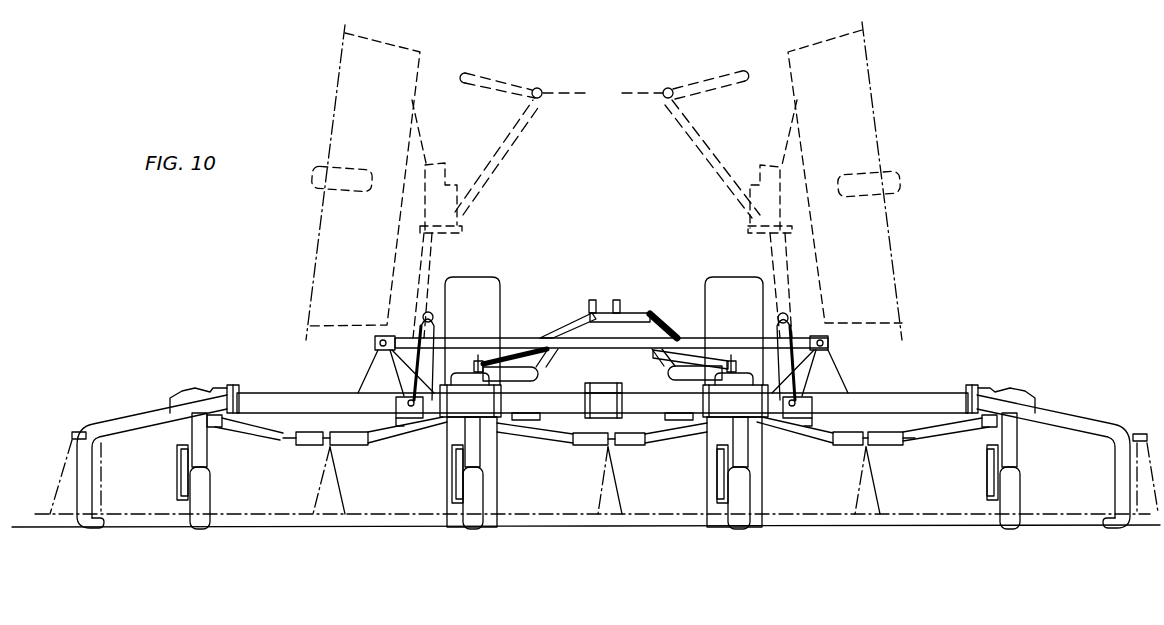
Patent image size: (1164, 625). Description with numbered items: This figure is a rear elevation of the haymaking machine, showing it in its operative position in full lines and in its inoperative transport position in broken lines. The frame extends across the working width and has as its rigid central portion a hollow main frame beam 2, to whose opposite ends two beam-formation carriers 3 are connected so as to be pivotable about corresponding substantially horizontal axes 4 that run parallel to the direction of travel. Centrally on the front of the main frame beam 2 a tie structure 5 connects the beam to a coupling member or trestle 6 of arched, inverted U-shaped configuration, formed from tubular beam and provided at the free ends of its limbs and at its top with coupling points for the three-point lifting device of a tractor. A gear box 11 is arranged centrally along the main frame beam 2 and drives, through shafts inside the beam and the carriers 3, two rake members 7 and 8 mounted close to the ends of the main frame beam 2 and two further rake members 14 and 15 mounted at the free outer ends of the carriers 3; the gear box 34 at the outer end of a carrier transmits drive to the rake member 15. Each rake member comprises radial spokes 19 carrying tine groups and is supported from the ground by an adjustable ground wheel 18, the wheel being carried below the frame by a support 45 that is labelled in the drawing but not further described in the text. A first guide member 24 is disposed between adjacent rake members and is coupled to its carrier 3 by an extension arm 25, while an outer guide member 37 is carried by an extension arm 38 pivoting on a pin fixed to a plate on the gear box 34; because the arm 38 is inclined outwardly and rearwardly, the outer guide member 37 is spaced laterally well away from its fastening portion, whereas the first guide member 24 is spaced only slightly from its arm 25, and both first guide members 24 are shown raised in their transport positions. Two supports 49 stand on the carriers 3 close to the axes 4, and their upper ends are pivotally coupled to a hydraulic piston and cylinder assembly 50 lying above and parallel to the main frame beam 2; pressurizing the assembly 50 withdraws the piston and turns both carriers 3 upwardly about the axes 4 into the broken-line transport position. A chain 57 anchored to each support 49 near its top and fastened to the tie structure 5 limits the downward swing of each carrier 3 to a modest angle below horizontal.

The main frame beam 2 is at (579, 398).
The beam-formation carrier 3 is at (440, 252).
The substantially horizontal axis 4 is at (478, 410).
The tie structure 5 is at (542, 372).
The coupling member or trestle 6 is at (567, 318).
The rake member 7 is at (410, 514).
The rake member 8 is at (683, 514).
The gear box 11 is at (598, 393).
The rake member 14 is at (335, 90).
The rake member 15 is at (878, 90).
The ground wheel 18 is at (315, 188).
The spoke 19 is at (277, 437).
The first guide member 24 is at (433, 313).
The extension arm 25 is at (400, 418).
The gear box 34 is at (440, 167).
The outer guide member 37 is at (1125, 540).
The extension arm 38 is at (487, 183).
The wheel support housing 45 is at (455, 422).
The support 49 is at (373, 357).
The hydraulic piston and cylinder assembly 50 is at (692, 342).
The chain 57 is at (472, 366).